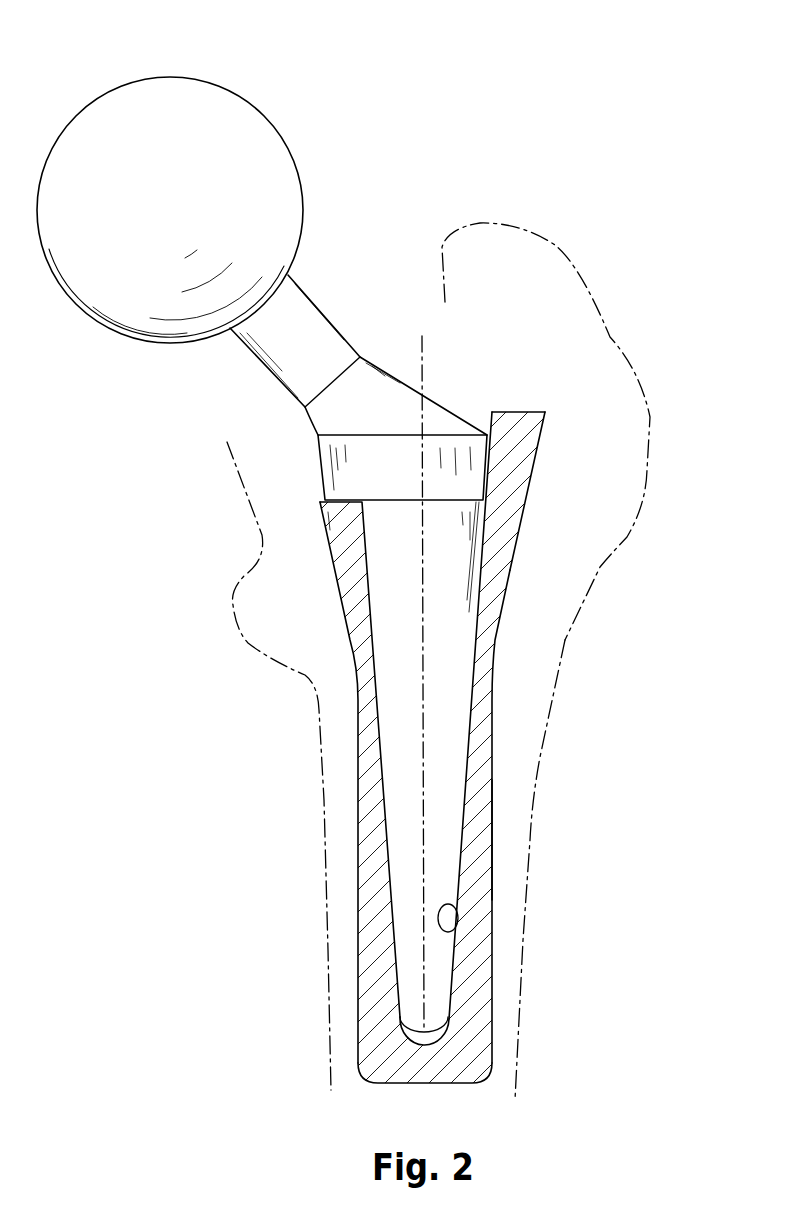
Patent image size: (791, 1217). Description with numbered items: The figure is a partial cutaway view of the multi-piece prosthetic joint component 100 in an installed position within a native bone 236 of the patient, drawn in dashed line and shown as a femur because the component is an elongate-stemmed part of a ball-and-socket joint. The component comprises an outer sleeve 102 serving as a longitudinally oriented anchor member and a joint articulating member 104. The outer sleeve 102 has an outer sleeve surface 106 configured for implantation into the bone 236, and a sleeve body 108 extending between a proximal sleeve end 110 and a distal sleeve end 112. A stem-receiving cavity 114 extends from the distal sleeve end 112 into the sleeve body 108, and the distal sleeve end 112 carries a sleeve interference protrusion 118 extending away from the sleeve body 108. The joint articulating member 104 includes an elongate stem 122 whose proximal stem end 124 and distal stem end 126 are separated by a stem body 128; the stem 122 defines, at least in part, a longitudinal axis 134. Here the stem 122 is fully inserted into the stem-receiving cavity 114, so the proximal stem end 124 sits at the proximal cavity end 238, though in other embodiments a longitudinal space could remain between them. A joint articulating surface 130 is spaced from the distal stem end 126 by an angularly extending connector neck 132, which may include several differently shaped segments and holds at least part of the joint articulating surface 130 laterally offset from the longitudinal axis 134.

The prosthetic joint component 100 is at (108, 75).
The outer sleeve 102 is at (508, 702).
The joint articulating member 104 is at (382, 228).
The outer sleeve surface 106 is at (492, 848).
The sleeve body 108 is at (470, 1002).
The proximal sleeve end 110 is at (525, 1075).
The distal sleeve end 112 is at (545, 520).
The stem-receiving cavity 114 is at (452, 930).
The sleeve interference protrusion 118 is at (550, 457).
The stem 122 is at (500, 750).
The proximal stem end 124 is at (318, 1047).
The distal stem end 126 is at (313, 533).
The stem body 128 is at (407, 675).
The joint articulating surface 130 is at (170, 194).
The connector neck 132 is at (237, 388).
The longitudinal axis 134 is at (422, 347).
The native bone 236 is at (602, 310).
The proximal cavity end 238 is at (444, 1043).